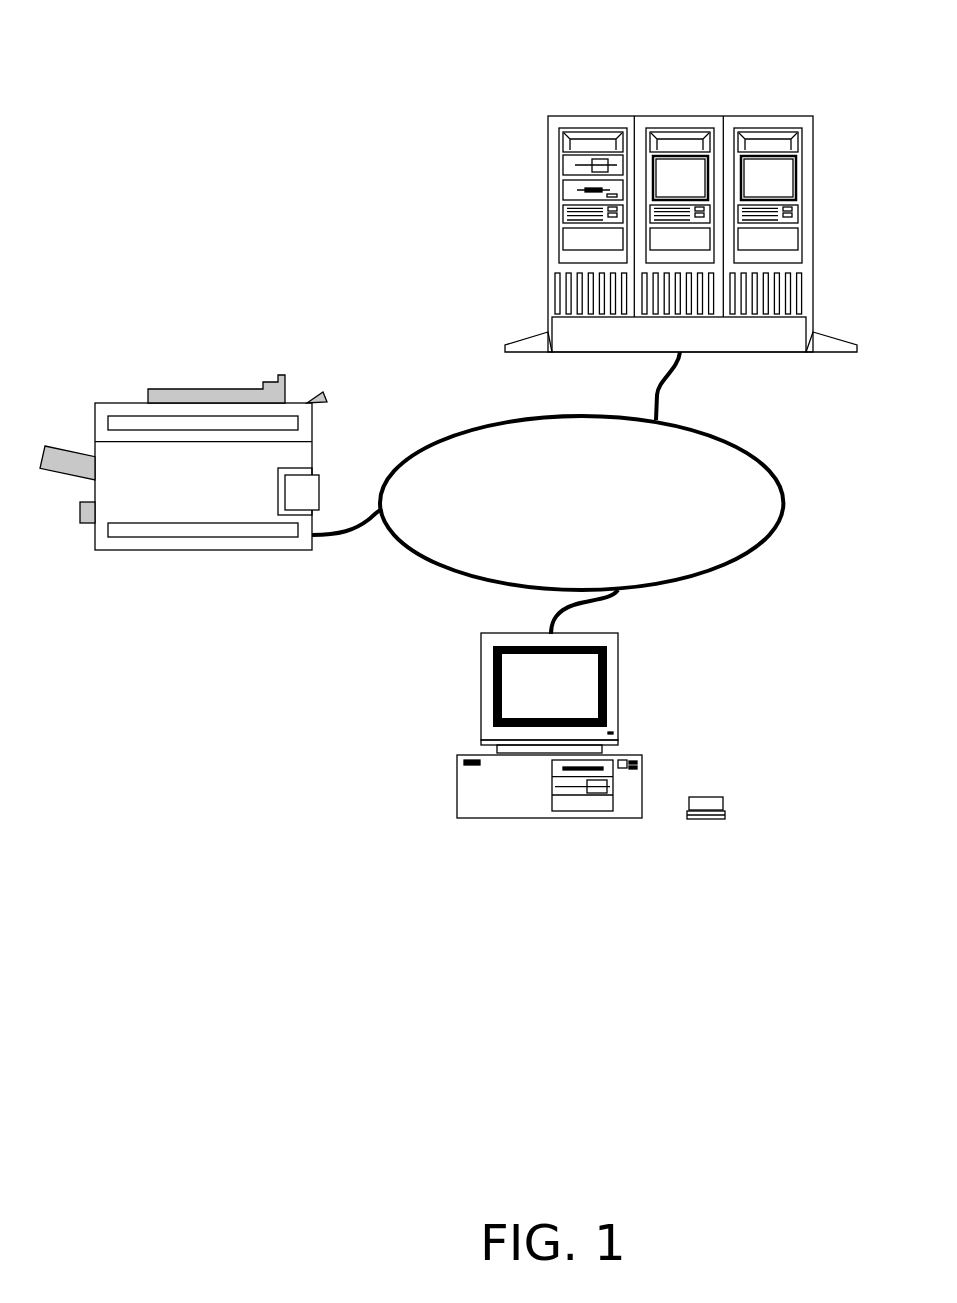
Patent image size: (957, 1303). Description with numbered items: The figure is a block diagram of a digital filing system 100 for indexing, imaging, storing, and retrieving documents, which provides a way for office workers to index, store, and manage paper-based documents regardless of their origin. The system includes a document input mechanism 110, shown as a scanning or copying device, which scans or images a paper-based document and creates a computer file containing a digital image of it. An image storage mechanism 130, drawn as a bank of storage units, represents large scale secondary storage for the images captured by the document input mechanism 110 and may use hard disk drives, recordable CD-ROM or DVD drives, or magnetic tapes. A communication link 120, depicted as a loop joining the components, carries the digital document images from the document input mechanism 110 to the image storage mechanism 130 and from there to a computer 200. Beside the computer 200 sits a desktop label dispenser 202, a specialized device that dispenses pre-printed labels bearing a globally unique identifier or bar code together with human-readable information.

The digital filing system 100 is at (324, 58).
The document input mechanism 110 is at (135, 402).
The communication link 120 is at (495, 422).
The image storage mechanism 130 is at (634, 117).
The computer 200 is at (513, 633).
The desktop label dispenser 202 is at (717, 795).